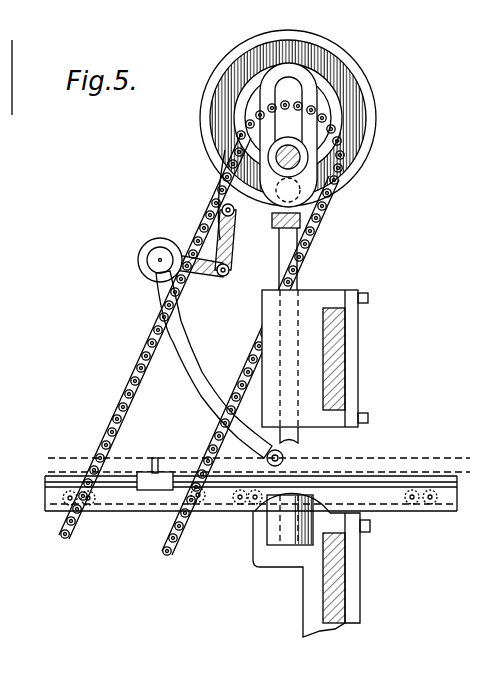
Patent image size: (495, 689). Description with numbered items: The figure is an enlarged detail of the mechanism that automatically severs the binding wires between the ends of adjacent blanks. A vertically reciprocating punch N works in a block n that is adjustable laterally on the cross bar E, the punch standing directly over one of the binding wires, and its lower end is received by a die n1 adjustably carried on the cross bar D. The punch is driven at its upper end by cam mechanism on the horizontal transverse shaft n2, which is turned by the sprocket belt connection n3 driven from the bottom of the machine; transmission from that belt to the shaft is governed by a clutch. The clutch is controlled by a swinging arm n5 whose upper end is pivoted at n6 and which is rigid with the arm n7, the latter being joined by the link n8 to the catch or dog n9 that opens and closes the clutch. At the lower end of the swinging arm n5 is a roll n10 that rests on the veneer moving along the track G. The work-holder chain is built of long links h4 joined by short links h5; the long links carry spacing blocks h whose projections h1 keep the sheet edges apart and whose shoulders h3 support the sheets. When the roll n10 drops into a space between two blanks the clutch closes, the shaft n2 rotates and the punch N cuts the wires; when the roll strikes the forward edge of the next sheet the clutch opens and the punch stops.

The transverse shaft n2 is at (306, 157).
The block n is at (293, 340).
The punch N is at (297, 290).
The cross bar E is at (330, 380).
The cross bar D is at (340, 597).
The track G is at (110, 500).
The spacing block h is at (177, 497).
The spacing projection h1 is at (155, 458).
The shoulder h3 is at (148, 472).
The long link h4 is at (438, 472).
The short link h5 is at (425, 500).
The die n1 is at (268, 540).
The sprocket belt connection n3 is at (195, 372).
The swinging arm n5 is at (198, 362).
The pivot n6 is at (155, 258).
The arm n7 is at (200, 258).
The link n8 is at (226, 277).
The catch or dog n9 is at (238, 282).
The roll n10 is at (284, 456).